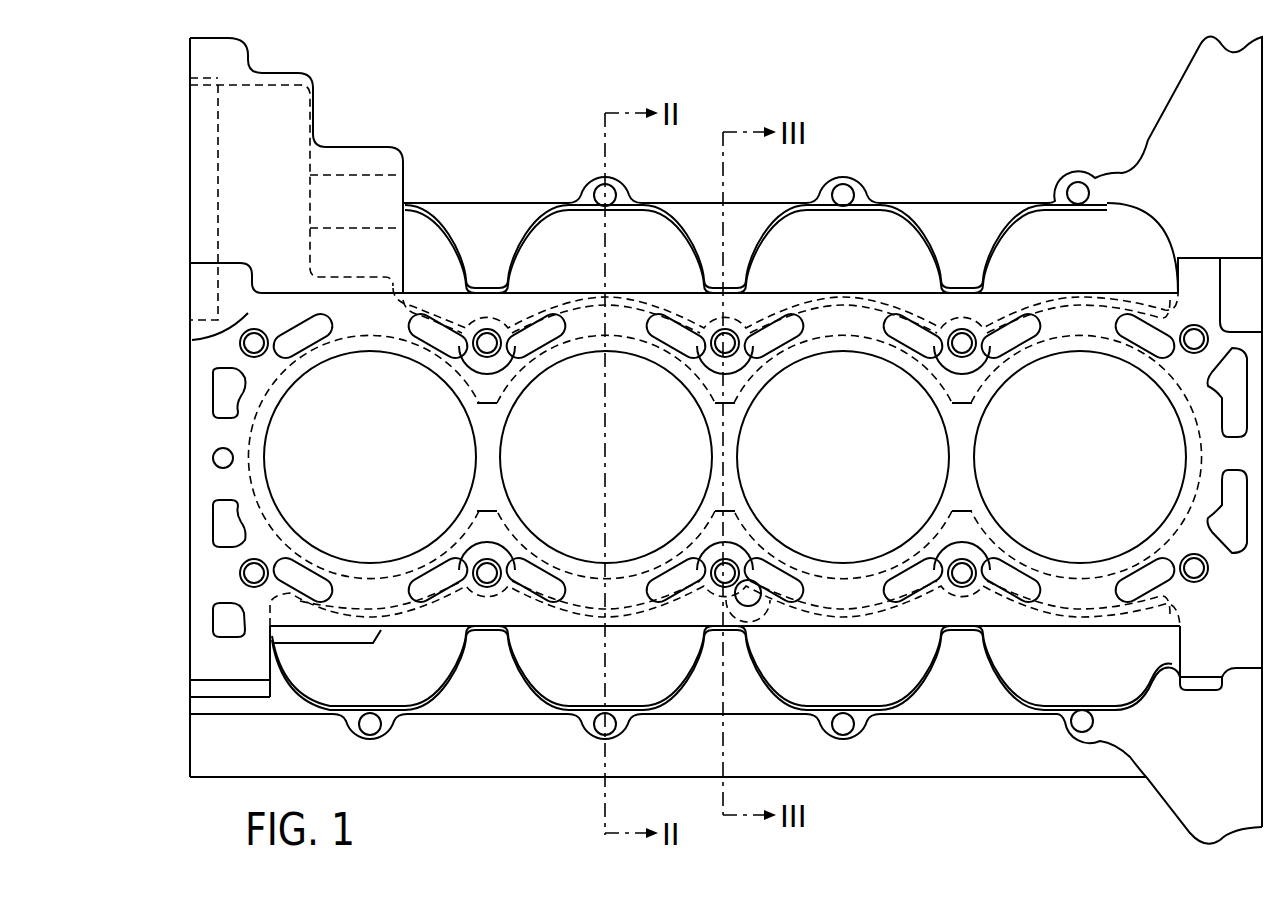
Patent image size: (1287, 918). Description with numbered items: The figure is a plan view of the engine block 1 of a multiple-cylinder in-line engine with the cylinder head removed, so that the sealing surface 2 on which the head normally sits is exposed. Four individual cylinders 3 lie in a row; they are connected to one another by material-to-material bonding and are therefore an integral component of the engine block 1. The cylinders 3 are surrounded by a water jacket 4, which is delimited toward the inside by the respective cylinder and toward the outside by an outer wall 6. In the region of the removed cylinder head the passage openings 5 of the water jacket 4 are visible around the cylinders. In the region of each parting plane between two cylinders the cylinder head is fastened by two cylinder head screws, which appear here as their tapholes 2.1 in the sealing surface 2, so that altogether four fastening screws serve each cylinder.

The engine block 1 is at (453, 129).
The sealing surface 2 is at (192, 339).
The tapholes 2.1 is at (480, 350).
The cylinders 3 is at (725, 457).
The water jacket 4 is at (583, 595).
The passage openings 5 is at (522, 565).
The outer wall 6 is at (808, 602).